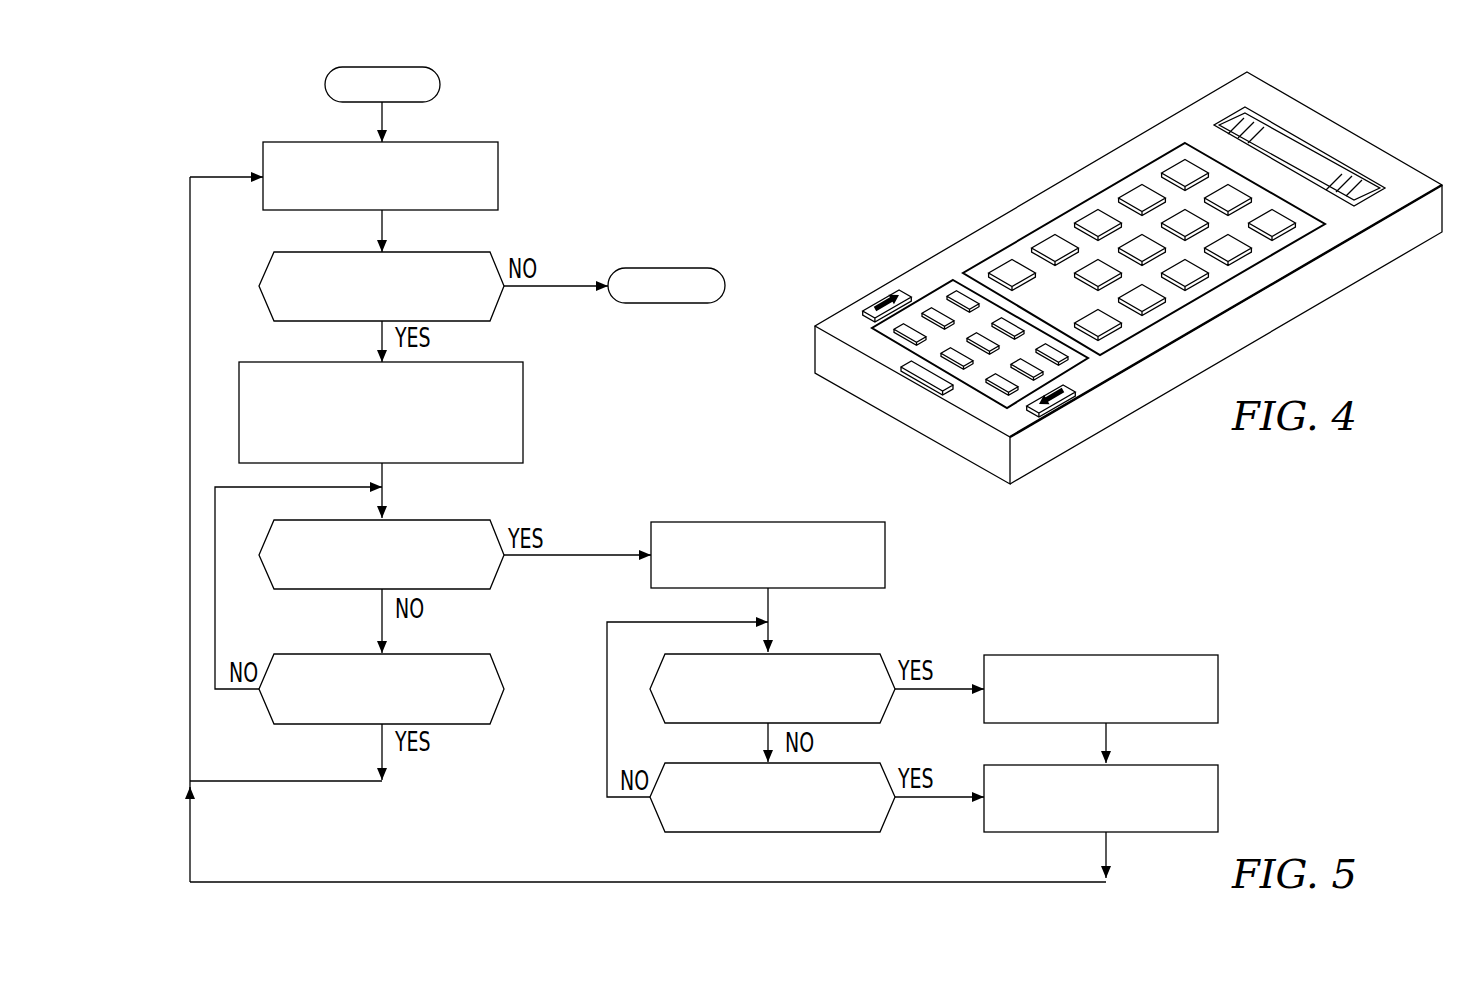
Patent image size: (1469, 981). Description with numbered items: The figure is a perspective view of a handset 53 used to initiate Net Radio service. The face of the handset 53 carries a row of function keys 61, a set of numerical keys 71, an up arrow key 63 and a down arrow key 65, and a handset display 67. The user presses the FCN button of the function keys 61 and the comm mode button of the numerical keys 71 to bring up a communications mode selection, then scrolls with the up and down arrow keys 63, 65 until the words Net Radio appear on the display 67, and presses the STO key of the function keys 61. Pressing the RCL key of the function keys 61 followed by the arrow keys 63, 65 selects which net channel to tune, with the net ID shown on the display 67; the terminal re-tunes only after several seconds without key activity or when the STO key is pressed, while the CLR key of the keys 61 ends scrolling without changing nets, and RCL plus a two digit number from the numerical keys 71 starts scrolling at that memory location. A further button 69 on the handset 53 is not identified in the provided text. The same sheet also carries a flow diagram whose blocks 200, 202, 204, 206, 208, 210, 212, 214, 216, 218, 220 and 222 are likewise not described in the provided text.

In FIG. 4, the handset 53 is at (1022, 186).
In FIG. 4, the function keys 61 is at (958, 298).
In FIG. 4, the up arrow key 63 is at (876, 302).
In FIG. 4, the down arrow key 65 is at (1063, 393).
In FIG. 4, the handset display 67 is at (1240, 122).
In FIG. 4, the push-to-talk button 69 is at (914, 368).
In FIG. 4, the numerical keys 71 is at (1128, 193).
In FIG. 5, the start 200 is at (438, 92).
In FIG. 5, the determine net to place priority call 202 is at (498, 165).
In FIG. 5, the valid net identified decision 204 is at (500, 303).
In FIG. 5, the format and transmit normal net radio access channel request 206 is at (523, 398).
In FIG. 5, the end 208 is at (655, 303).
In FIG. 5, the channel assignment received decision 210 is at (497, 573).
In FIG. 5, the timer expired decision 212 is at (497, 708).
In FIG. 5, the tune to FES-C channel 214 is at (885, 548).
In FIG. 5, the NRSU received decision 216 is at (888, 708).
In FIG. 5, the timer expired decision 218 is at (888, 818).
In FIG. 5, the goto NR call monitoring 220 is at (1218, 680).
In FIG. 5, the retune to GC-S channel 222 is at (1218, 792).